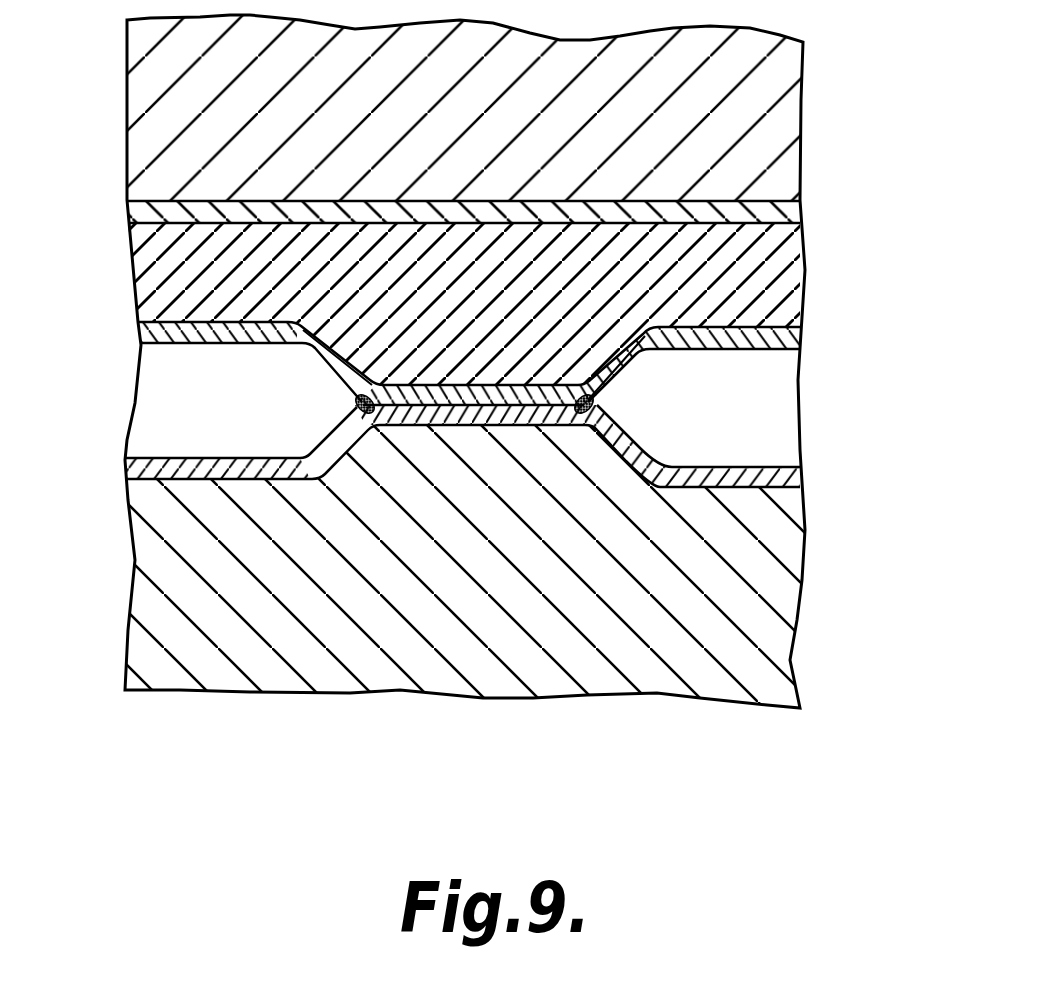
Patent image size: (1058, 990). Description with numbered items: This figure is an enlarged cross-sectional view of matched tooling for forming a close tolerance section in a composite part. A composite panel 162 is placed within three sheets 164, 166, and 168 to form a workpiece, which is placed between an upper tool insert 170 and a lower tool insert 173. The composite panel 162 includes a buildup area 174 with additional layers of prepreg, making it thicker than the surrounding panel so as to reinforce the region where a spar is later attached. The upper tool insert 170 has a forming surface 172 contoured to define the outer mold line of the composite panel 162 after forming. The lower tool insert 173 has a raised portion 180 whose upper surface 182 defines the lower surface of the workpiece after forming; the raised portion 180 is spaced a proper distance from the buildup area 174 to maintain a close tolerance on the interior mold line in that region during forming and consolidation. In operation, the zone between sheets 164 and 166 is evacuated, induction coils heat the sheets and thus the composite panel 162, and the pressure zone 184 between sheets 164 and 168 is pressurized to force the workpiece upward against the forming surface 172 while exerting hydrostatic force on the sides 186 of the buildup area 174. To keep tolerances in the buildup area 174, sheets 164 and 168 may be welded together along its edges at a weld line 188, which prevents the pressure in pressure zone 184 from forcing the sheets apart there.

The composite panel 162 is at (157, 275).
The sheet 164 is at (818, 338).
The sheet 166 is at (138, 213).
The sheet 168 is at (130, 465).
The upper tool insert 170 is at (777, 105).
The forming surface 172 is at (768, 202).
The lower tool insert 173 is at (745, 613).
The buildup area 174 is at (517, 360).
The raised portion 180 is at (393, 467).
The upper surface 182 is at (473, 427).
The pressure zone 184 is at (167, 371).
The sides 186 is at (340, 369).
The weld line 188 is at (355, 407).